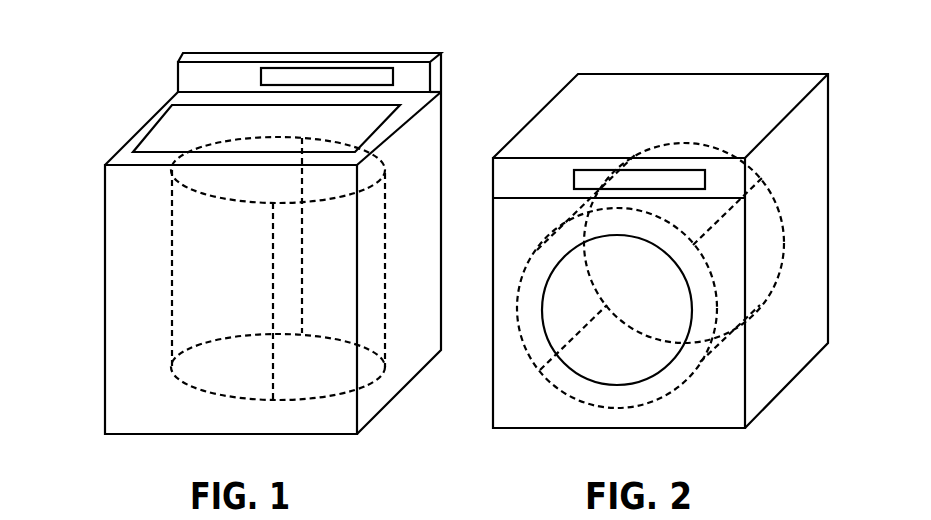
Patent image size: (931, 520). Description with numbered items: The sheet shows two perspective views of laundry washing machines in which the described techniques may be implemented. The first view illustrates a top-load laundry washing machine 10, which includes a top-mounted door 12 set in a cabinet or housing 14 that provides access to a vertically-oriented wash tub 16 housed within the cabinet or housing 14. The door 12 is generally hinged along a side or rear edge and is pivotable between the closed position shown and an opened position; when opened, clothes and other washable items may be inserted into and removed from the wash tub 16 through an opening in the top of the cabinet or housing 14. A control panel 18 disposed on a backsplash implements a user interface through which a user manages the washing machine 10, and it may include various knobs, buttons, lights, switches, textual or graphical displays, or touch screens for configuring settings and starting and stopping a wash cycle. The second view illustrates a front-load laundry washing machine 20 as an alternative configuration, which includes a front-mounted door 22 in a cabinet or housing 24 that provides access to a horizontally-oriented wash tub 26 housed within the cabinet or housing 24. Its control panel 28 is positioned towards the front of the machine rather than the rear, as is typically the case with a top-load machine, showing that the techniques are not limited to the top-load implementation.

In FIG. 1, the laundry washing machine 10 is at (96, 117).
In FIG. 1, the top-mounted door 12 is at (170, 127).
In FIG. 1, the cabinet or housing 14 is at (104, 251).
In FIG. 1, the wash tub 16 is at (171, 310).
In FIG. 1, the control panel 18 is at (312, 66).
In FIG. 2, the front-load laundry washing machine 20 is at (533, 108).
In FIG. 2, the front-mounted door 22 is at (627, 364).
In FIG. 2, the cabinet or housing 24 is at (691, 72).
In FIG. 2, the wash tub 26 is at (676, 146).
In FIG. 2, the control panel 28 is at (592, 167).